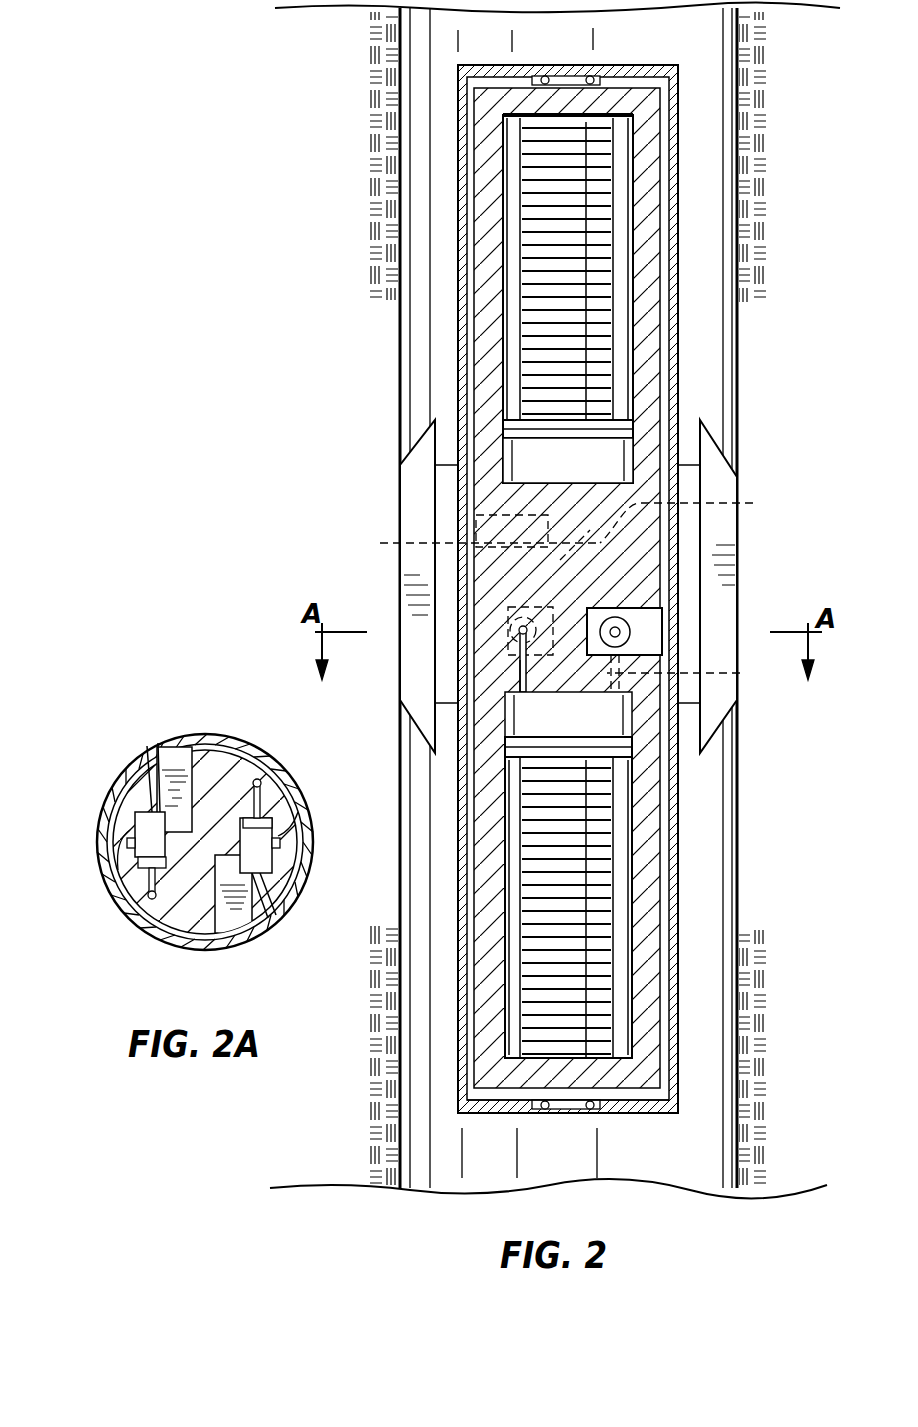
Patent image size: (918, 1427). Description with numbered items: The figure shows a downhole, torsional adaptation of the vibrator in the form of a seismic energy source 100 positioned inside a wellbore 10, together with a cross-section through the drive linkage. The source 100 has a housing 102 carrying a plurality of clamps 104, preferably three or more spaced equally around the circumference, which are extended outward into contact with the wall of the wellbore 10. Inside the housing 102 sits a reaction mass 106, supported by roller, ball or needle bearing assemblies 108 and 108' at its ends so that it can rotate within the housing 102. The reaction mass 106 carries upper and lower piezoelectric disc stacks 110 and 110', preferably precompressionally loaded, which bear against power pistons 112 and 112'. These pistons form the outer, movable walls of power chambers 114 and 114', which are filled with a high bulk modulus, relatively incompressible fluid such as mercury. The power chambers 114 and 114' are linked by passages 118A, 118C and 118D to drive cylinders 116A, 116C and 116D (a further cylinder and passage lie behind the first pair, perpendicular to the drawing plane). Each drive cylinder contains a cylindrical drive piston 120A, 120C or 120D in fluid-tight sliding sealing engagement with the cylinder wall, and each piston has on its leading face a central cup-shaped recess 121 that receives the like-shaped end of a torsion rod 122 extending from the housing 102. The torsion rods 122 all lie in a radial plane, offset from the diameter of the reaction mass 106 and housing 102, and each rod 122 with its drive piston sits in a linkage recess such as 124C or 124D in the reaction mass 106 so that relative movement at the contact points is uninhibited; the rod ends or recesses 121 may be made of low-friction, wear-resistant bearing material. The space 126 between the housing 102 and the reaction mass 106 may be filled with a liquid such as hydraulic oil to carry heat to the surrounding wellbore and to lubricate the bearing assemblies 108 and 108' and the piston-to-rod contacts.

In FIG. 2, the wellbore 10 is at (737, 185).
In FIG. 2, the seismic energy source 100 is at (678, 92).
In FIG. 2, the housing 102 is at (670, 362).
In FIG. 2, the clamps 104 is at (418, 505).
In FIG. 2, the reaction mass 106 is at (660, 305).
In FIG. 2, the bearing assembly 108 is at (565, 46).
In FIG. 2, the bearing assembly 108' is at (566, 1133).
In FIG. 2, the upper piezoelectric disc stack 110 is at (607, 299).
In FIG. 2, the lower piezoelectric disc stack 110' is at (652, 907).
In FIG. 2, the power piston 112 is at (485, 408).
In FIG. 2, the power piston 112' is at (652, 774).
In FIG. 2, the power chamber 114 is at (610, 435).
In FIG. 2, the power chamber 114' is at (652, 725).
In FIG. 2, the drive cylinder 116A is at (566, 572).
In FIG. 2, the drive cylinder 116C is at (548, 608).
In FIG. 2A, the drive cylinder 116C is at (108, 800).
In FIG. 2, the drive cylinder 116D is at (640, 605).
In FIG. 2A, the drive cylinder 116D is at (295, 825).
In FIG. 2, the passage 118A is at (702, 514).
In FIG. 2, the passage 118C is at (520, 678).
In FIG. 2, the passage 118D is at (703, 676).
In FIG. 2, the drive piston 120A is at (568, 460).
In FIG. 2A, the drive piston 120C is at (128, 908).
In FIG. 2A, the drive piston 120D is at (290, 868).
In FIG. 2, the cup-shaped recess 121 is at (520, 530).
In FIG. 2, the torsion rod 122 is at (471, 552).
In FIG. 2A, the torsion rod 122 is at (163, 742).
In FIG. 2A, the linkage recess 124C is at (127, 843).
In FIG. 2A, the linkage recess 124D is at (280, 843).
In FIG. 2, the space 126 is at (668, 1100).